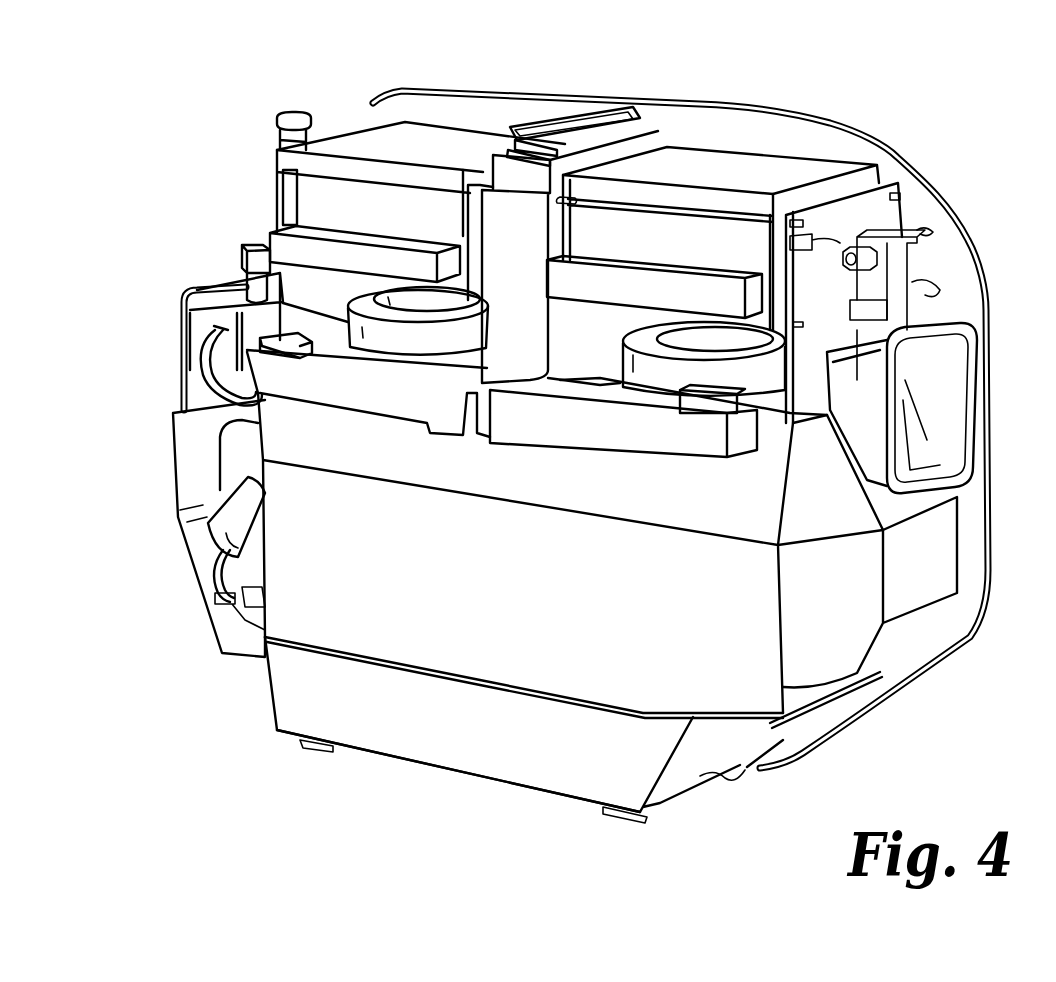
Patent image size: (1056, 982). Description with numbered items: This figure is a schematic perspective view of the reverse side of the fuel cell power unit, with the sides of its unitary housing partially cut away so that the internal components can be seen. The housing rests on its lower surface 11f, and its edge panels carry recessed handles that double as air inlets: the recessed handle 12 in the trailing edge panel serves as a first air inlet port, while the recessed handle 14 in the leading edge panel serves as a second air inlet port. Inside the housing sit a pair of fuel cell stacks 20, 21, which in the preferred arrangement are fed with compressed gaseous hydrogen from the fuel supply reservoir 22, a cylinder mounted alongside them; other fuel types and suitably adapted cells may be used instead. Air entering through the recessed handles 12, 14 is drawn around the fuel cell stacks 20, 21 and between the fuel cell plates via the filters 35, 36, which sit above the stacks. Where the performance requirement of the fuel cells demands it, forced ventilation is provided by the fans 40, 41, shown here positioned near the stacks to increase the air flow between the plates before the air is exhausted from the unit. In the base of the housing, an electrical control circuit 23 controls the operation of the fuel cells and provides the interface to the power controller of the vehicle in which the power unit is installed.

The lower surface 11f is at (440, 778).
The recessed handle 12 is at (193, 377).
The recessed handle 14 is at (925, 395).
The fuel cell stack 20 is at (382, 205).
The fuel cell stack 21 is at (652, 244).
The fuel supply reservoir 22 is at (843, 593).
The electrical control circuit 23 is at (323, 708).
The filter 35 is at (377, 147).
The filter 36 is at (740, 170).
The fan 40 is at (182, 313).
The fan 41 is at (667, 377).